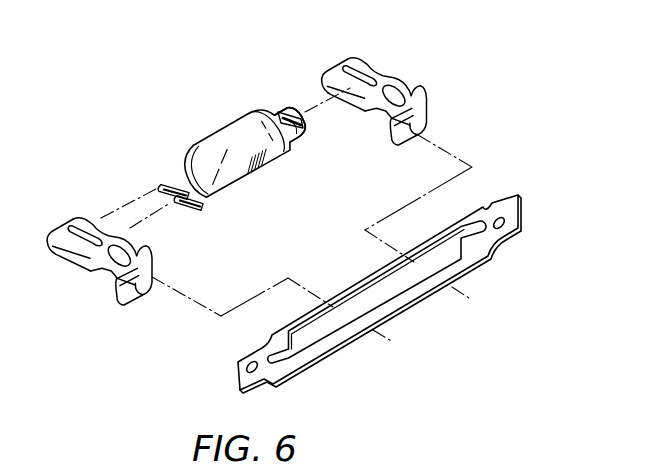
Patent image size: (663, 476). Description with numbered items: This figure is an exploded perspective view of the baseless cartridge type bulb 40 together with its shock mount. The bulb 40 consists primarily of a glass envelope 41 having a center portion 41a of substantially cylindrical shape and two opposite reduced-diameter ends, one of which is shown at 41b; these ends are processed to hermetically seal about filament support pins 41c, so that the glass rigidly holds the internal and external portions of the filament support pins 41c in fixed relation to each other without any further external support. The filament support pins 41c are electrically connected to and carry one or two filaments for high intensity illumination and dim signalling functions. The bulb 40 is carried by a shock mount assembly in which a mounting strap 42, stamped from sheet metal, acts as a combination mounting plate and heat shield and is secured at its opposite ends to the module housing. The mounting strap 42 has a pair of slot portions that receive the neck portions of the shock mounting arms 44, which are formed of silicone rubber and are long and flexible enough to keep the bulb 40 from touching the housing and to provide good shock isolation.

The baseless cartridge type bulb 40 is at (202, 135).
The glass envelope 41 is at (242, 116).
The center portion 41a is at (243, 183).
The reduced diameter end 41b is at (290, 140).
The filament support pins 41c is at (288, 111).
The mounting strap 42 is at (477, 273).
The shock mounting arms 44 is at (352, 60).